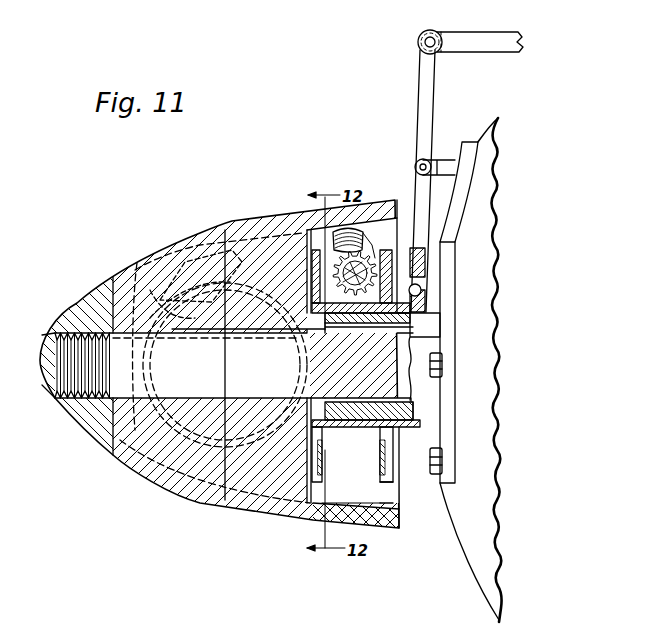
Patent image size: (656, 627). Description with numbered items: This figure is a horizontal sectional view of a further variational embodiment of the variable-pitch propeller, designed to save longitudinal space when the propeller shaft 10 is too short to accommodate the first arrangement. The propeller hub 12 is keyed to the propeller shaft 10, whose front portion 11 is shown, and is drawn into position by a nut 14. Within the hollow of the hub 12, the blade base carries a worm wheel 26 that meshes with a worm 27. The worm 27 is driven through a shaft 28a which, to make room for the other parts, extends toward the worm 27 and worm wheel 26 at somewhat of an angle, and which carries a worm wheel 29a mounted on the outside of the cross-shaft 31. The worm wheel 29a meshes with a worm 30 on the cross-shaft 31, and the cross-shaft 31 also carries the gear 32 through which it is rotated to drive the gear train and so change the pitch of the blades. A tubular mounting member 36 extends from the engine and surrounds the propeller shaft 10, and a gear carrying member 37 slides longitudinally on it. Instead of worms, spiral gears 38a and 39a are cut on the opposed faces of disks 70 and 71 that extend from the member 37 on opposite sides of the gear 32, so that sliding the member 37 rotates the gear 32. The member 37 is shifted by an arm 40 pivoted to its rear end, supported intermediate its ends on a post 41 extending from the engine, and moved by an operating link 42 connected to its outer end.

The propeller shaft 10 is at (95, 420).
The front portion of the propeller shaft 11 is at (483, 532).
The propeller hub 12 is at (197, 498).
The nut 14 is at (93, 445).
The worm wheel 26 is at (150, 295).
The worm 27 is at (200, 270).
The shaft 28a is at (312, 240).
The worm wheel 29a is at (345, 250).
The worm 30 is at (350, 240).
The cross-shaft 31 is at (340, 323).
The gear 32 is at (340, 280).
The tubular mounting member 36 is at (400, 413).
The gear carrying member 37 is at (353, 434).
The spiral gear 38a is at (373, 490).
The spiral gear 39a is at (382, 525).
The arm 40 is at (420, 108).
The post 41 is at (448, 165).
The operating link 42 is at (487, 50).
The disk 70 is at (313, 503).
The disk 71 is at (389, 484).